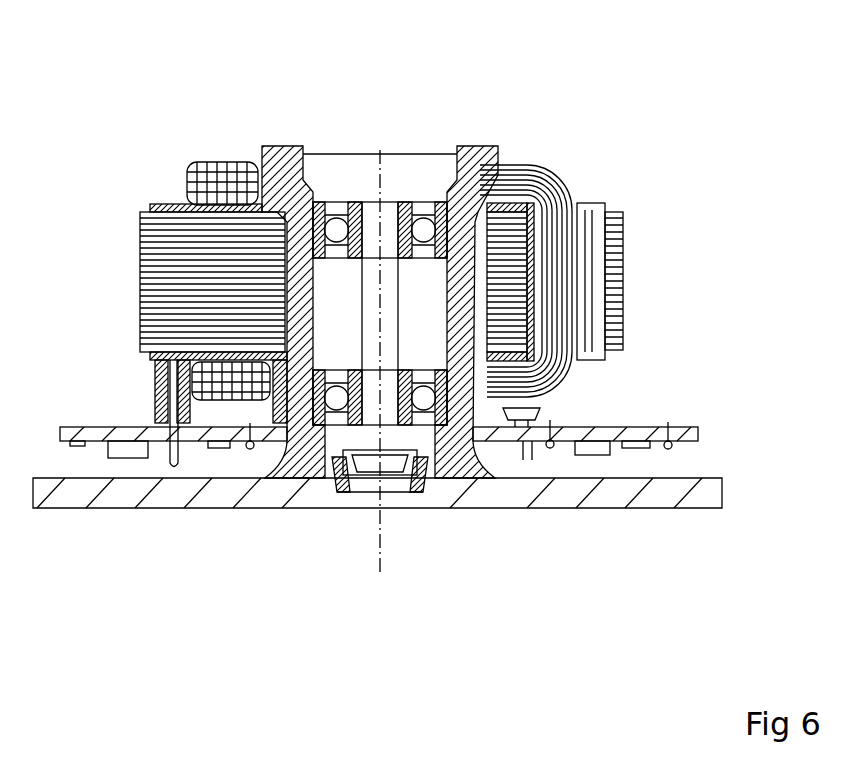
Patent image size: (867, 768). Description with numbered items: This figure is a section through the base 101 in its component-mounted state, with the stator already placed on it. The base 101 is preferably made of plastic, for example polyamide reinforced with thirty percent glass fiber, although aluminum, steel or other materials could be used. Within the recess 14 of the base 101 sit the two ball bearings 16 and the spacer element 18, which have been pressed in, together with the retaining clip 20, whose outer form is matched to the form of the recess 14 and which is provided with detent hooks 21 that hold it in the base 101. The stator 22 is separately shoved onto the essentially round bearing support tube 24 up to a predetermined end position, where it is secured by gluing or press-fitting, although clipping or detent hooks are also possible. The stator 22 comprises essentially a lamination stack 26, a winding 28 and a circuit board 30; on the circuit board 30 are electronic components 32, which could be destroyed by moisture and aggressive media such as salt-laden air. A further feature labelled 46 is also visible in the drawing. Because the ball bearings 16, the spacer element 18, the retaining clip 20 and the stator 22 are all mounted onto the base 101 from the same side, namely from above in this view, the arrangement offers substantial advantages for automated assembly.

The recess 14 is at (333, 146).
The ball bearings 16 is at (553, 283).
The spacer element 18 is at (303, 285).
The retaining clip 20 is at (340, 497).
The detent hooks 21 is at (362, 487).
The stator 22 is at (480, 146).
The bearing support tube 24 is at (300, 146).
The lamination stack 26 is at (143, 233).
The winding 28 is at (623, 243).
The circuit board 30 is at (690, 427).
The electronic components 32 is at (668, 449).
The base plate 46 is at (160, 490).
The base 101 is at (462, 490).